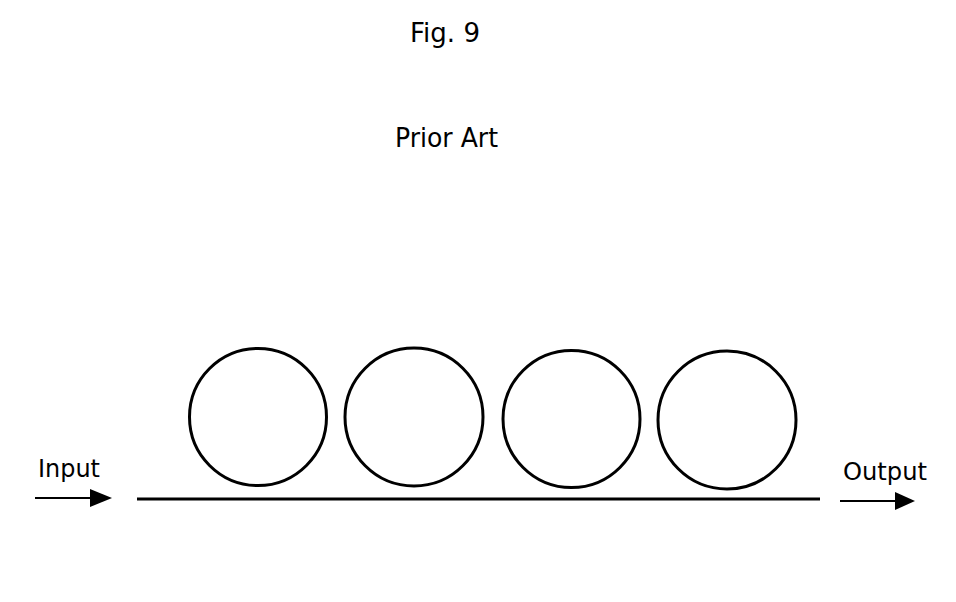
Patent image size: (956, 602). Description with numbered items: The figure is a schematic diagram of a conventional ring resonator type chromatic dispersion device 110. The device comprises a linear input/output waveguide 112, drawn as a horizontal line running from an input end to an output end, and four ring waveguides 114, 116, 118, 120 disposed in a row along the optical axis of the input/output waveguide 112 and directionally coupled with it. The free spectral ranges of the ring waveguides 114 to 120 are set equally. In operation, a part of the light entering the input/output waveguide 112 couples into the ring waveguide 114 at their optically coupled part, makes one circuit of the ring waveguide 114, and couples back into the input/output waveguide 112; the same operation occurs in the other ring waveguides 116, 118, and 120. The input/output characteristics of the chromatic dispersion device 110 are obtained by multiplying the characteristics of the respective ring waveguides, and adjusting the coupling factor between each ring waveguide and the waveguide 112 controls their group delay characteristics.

The chromatic dispersion device 110 is at (674, 256).
The input/output waveguide 112 is at (432, 501).
The ring waveguide 114 is at (282, 353).
The ring waveguide 116 is at (432, 358).
The ring waveguide 118 is at (580, 352).
The ring waveguide 120 is at (730, 352).